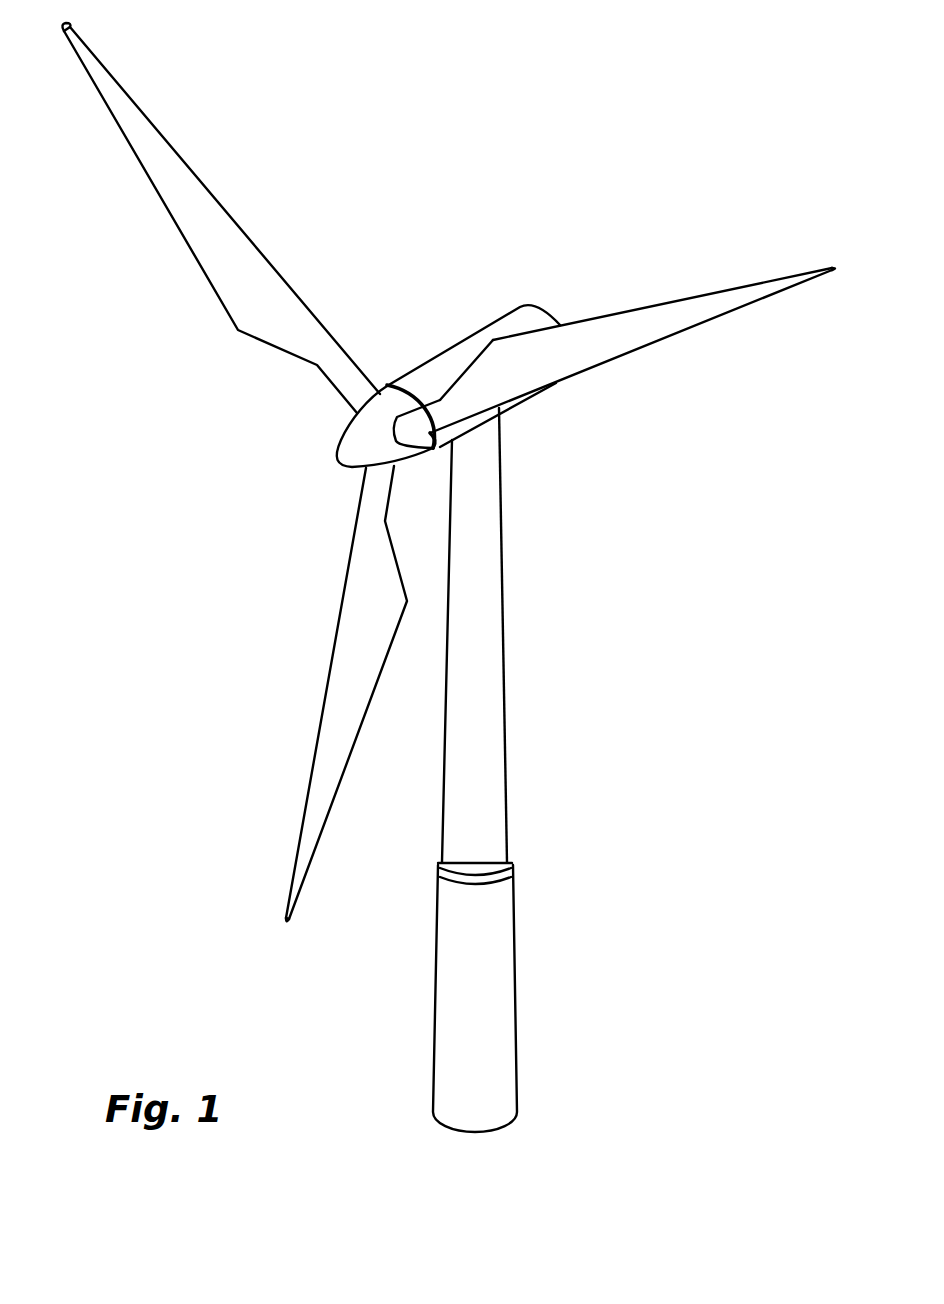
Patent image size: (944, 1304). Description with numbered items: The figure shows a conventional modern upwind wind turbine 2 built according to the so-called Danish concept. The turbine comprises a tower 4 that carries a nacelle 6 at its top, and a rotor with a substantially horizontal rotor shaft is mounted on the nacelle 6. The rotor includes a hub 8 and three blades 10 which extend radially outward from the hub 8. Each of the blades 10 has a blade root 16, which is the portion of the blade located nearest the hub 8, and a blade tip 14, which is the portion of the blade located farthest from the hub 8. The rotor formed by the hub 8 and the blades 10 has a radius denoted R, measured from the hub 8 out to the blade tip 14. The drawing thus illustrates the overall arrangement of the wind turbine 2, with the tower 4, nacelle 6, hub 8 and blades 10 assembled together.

The wind turbine 2 is at (592, 715).
The tower 4 is at (492, 643).
The nacelle 6 is at (441, 362).
The hub 8 is at (353, 443).
The blade 10 is at (252, 303).
The blade tip 14 is at (107, 78).
The blade root 16 is at (360, 407).